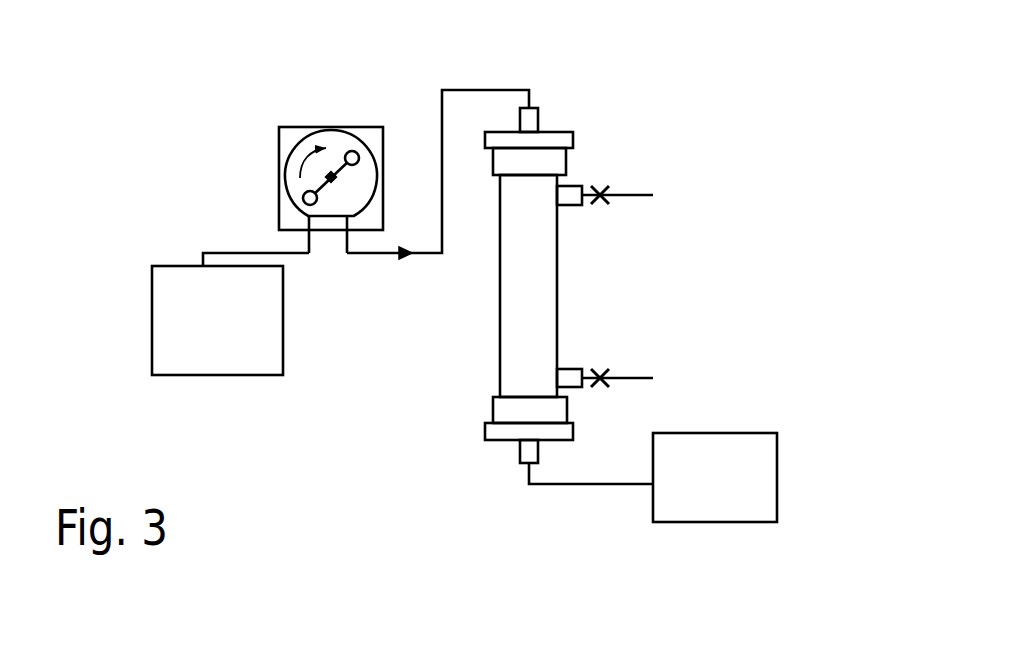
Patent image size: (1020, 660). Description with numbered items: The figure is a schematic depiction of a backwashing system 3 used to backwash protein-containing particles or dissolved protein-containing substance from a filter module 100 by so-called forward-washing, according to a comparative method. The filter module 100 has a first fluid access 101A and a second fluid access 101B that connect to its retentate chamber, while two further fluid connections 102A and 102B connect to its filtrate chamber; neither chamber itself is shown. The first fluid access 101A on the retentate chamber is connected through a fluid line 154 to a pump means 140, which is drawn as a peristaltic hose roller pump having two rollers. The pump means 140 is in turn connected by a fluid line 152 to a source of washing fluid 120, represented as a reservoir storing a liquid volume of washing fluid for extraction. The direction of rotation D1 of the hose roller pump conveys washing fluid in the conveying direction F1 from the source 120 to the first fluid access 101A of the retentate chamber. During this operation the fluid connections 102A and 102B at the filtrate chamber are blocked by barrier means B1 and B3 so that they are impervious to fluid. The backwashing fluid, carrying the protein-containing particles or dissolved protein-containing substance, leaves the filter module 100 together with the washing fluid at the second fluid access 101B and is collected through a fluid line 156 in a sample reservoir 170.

The backwashing system 3 is at (737, 118).
The filter module 100 is at (489, 379).
The first fluid access 101A is at (546, 112).
The second fluid access 101B is at (513, 460).
The fluid connection 102A is at (588, 183).
The fluid connection 102B is at (575, 361).
The barrier means B1 is at (619, 185).
The barrier means B3 is at (620, 364).
The source of washing fluid 120 is at (215, 380).
The pump means 140 is at (272, 183).
The direction of rotation D1 is at (305, 153).
The conveying direction F1 is at (407, 263).
The fluid line 152 is at (302, 260).
The fluid line 154 is at (478, 86).
The fluid line 156 is at (592, 496).
The sample reservoir 170 is at (720, 534).